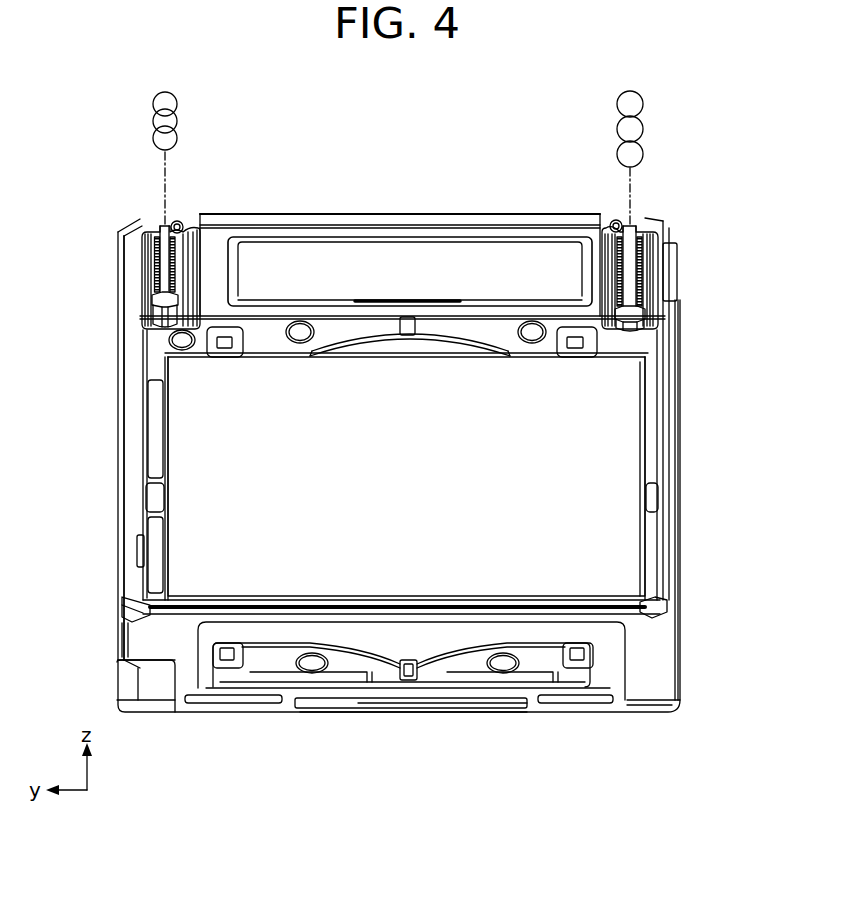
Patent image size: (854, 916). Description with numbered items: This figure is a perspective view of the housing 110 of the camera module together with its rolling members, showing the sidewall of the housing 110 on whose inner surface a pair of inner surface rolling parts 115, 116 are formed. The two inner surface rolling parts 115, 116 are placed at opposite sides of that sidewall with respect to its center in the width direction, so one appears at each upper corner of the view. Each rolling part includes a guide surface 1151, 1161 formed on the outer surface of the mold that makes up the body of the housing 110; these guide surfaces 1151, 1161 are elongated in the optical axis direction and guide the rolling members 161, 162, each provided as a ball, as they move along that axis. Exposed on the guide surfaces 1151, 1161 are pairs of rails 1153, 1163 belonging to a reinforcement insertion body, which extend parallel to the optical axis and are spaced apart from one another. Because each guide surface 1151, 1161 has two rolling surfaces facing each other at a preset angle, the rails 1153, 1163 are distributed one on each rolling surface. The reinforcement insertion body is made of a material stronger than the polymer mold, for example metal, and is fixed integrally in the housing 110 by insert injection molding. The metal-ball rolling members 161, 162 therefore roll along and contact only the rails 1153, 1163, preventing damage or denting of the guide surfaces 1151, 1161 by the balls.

The housing 110 is at (412, 216).
The inner surface rolling part 115 is at (644, 220).
The inner surface rolling part 116 is at (151, 219).
The guide surface 1151 is at (630, 253).
The rails 1153 is at (610, 270).
The guide surface 1161 is at (163, 248).
The rails 1163 is at (183, 288).
The rolling member 161 is at (614, 92).
The rolling member 162 is at (154, 92).